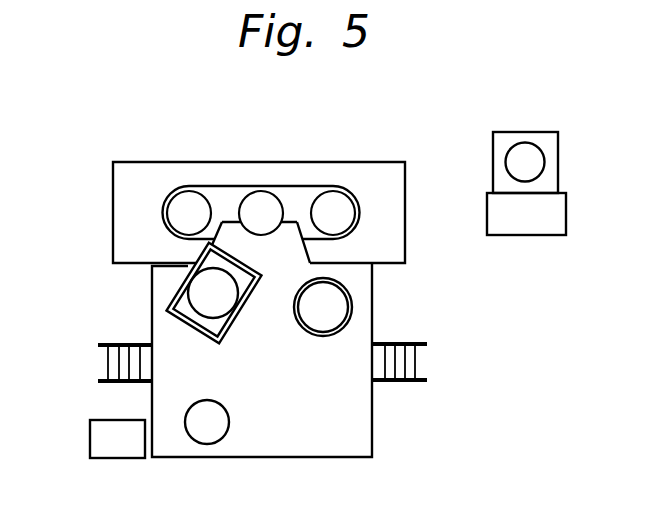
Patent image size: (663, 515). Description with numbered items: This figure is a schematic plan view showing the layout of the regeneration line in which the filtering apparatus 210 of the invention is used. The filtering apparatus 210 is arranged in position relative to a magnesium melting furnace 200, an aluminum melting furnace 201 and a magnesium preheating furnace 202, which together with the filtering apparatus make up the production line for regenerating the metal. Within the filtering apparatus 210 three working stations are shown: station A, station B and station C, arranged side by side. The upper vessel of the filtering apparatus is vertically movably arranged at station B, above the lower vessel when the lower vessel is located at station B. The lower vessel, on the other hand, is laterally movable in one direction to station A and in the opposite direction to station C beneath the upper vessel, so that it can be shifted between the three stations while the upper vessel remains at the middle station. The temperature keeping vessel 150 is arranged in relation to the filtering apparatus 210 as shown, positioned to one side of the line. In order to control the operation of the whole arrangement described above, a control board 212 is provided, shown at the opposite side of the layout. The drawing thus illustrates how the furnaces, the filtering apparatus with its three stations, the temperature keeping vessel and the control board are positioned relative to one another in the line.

The filtering apparatus 210 is at (347, 156).
The station A is at (183, 202).
The station B is at (265, 197).
The station C is at (348, 203).
The magnesium melting furnace 200 is at (223, 303).
The aluminum melting furnace 201 is at (340, 308).
The magnesium preheating furnace 202 is at (219, 423).
The control board 212 is at (94, 438).
The temperature keeping vessel 150 is at (563, 181).